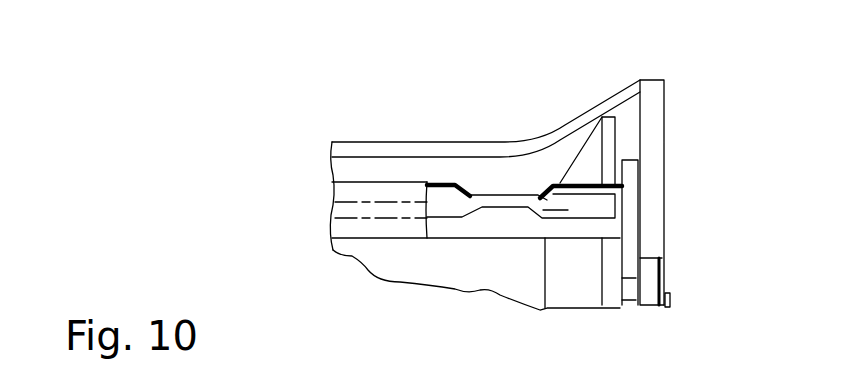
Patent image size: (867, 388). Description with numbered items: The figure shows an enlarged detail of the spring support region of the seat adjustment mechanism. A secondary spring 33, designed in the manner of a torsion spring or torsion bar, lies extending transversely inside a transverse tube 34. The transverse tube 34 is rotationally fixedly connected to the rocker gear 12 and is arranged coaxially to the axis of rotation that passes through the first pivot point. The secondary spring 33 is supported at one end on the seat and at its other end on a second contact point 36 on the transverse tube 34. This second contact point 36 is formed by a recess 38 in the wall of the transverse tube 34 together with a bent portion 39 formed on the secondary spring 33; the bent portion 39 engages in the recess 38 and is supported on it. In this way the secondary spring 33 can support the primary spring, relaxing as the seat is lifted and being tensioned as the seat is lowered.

The rocker gear 12 is at (625, 250).
The secondary spring 33 is at (370, 208).
The transverse tube 34 is at (378, 177).
The second contact point 36 is at (465, 123).
The recess 38 is at (478, 178).
The bent portion 39 is at (512, 198).